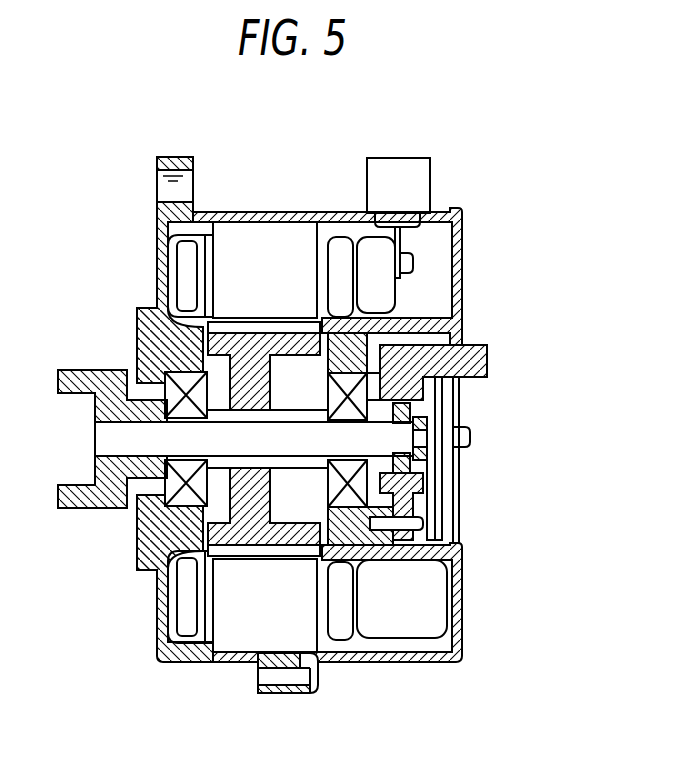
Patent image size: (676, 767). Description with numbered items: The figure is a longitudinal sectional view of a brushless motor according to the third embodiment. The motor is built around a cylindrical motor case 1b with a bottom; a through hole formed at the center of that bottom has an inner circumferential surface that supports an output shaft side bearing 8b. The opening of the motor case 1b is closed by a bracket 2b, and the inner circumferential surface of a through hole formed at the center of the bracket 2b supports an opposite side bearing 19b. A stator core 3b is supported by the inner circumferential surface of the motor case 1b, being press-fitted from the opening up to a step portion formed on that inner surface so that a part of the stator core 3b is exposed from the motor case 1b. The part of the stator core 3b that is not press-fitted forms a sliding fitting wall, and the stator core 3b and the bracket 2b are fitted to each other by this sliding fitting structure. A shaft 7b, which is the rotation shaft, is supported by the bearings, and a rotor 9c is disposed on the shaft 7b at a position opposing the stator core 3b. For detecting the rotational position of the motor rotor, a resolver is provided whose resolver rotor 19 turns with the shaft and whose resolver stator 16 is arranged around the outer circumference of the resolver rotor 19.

The motor case 1b is at (192, 653).
The bracket 2b is at (381, 662).
The stator core 3b is at (243, 640).
The shaft 7b is at (173, 438).
The output shaft side bearing 8b is at (187, 375).
The rotor 9c is at (207, 529).
The resolver stator 16 is at (418, 473).
The resolver rotor 19 is at (423, 465).
The opposite side bearing 19b is at (350, 370).